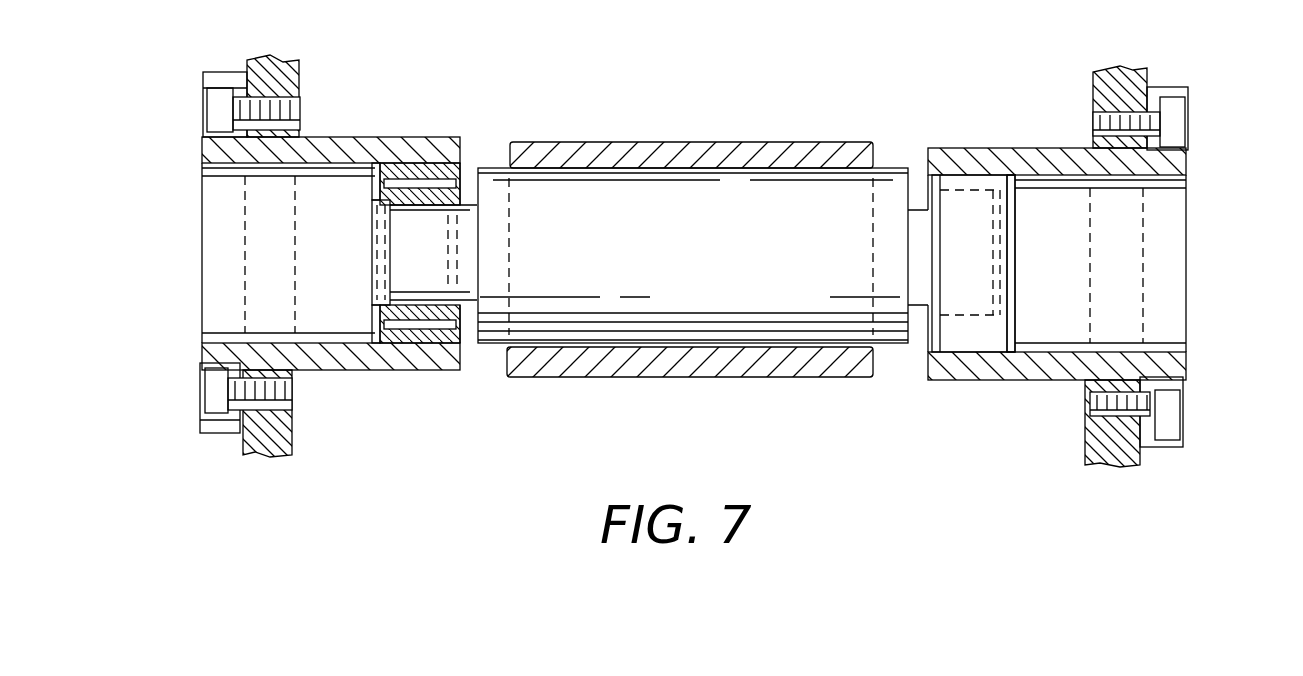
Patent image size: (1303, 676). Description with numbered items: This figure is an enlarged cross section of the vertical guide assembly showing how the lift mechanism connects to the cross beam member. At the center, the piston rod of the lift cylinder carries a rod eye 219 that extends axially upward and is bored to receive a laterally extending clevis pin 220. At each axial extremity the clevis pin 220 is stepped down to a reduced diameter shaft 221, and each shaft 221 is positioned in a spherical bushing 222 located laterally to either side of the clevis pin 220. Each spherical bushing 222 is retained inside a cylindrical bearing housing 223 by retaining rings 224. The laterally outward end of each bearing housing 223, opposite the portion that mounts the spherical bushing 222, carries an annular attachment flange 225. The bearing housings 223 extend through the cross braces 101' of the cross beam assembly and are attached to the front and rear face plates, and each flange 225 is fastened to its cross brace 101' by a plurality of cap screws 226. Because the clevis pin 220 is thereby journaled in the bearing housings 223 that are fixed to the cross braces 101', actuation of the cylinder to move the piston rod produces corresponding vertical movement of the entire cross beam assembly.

The cross brace 101' is at (695, 287).
The rod eye 219 is at (625, 145).
The clevis pin 220 is at (795, 195).
The shaft 221 is at (468, 292).
The spherical bushing 222 is at (432, 165).
The bearing housing 223 is at (330, 355).
The retaining ring 224 is at (383, 168).
The annular attachment flange 225 is at (230, 80).
The cap screw 226 is at (218, 110).